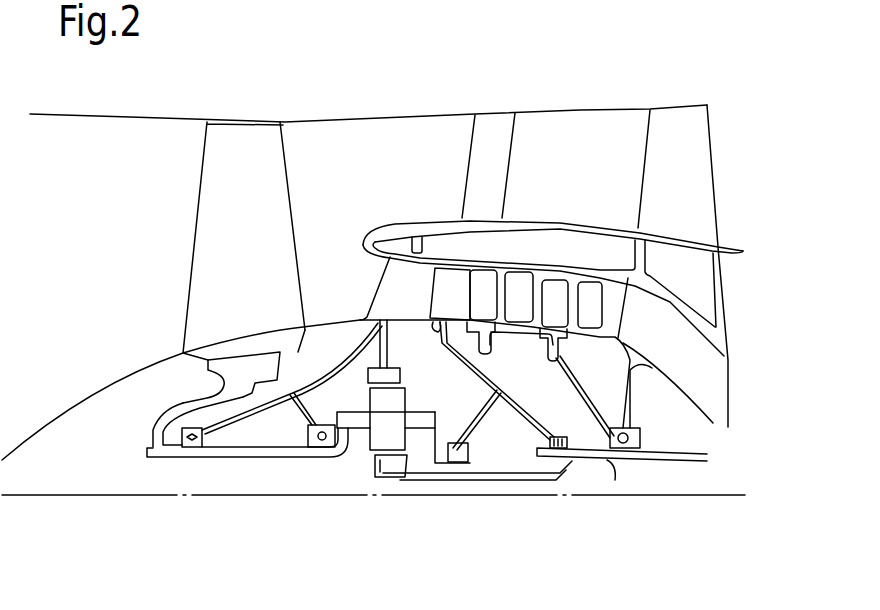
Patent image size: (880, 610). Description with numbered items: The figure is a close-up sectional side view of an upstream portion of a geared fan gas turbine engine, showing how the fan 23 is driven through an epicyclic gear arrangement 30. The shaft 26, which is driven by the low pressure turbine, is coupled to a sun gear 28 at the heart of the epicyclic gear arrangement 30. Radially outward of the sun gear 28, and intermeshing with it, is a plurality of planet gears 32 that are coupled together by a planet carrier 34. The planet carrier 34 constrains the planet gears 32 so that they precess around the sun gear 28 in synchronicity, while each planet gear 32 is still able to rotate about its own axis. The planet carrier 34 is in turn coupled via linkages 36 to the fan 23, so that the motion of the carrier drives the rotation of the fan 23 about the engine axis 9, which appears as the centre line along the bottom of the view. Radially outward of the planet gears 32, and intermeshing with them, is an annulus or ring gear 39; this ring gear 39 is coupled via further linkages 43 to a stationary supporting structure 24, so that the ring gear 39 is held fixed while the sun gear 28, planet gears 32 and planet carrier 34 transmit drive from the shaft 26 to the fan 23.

The engine axis 9 is at (152, 497).
The fan 23 is at (217, 271).
The stationary supporting structure 24 is at (397, 285).
The shaft 26 is at (513, 480).
The sun gear 28 is at (386, 472).
The epicyclic gear arrangement 30 is at (348, 453).
The planet gears 32 is at (370, 437).
The planet carrier 34 is at (425, 447).
The linkages 36 is at (342, 452).
The ring gear 39 is at (368, 376).
The linkages 43 is at (390, 340).